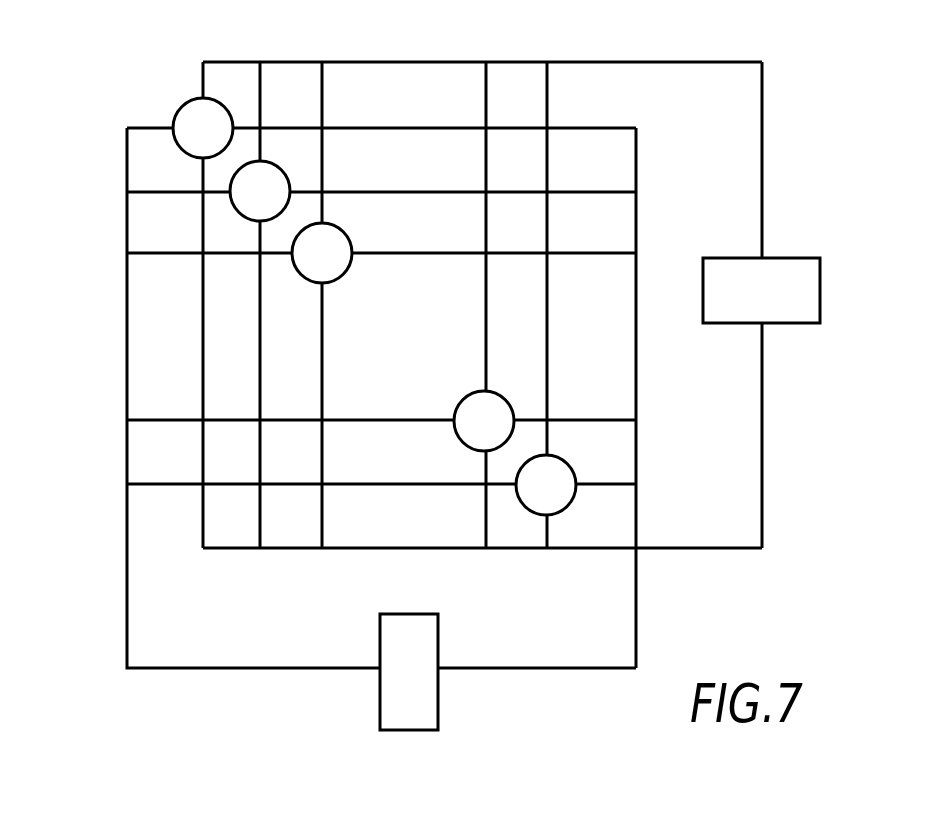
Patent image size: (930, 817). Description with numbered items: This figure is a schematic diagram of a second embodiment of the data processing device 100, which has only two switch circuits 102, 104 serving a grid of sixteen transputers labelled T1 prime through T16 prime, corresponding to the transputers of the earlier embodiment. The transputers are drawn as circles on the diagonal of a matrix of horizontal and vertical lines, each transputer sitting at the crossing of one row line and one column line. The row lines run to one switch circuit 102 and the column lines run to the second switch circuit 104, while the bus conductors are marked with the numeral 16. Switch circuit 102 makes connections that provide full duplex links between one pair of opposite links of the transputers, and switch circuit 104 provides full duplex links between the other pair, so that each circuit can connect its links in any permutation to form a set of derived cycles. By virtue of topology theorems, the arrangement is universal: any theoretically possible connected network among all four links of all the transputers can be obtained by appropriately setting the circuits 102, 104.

The data processing device 100 is at (106, 278).
The switch circuit 102 is at (425, 704).
The second switch circuit 104 is at (777, 320).
The conductor lines 16 is at (750, 147).